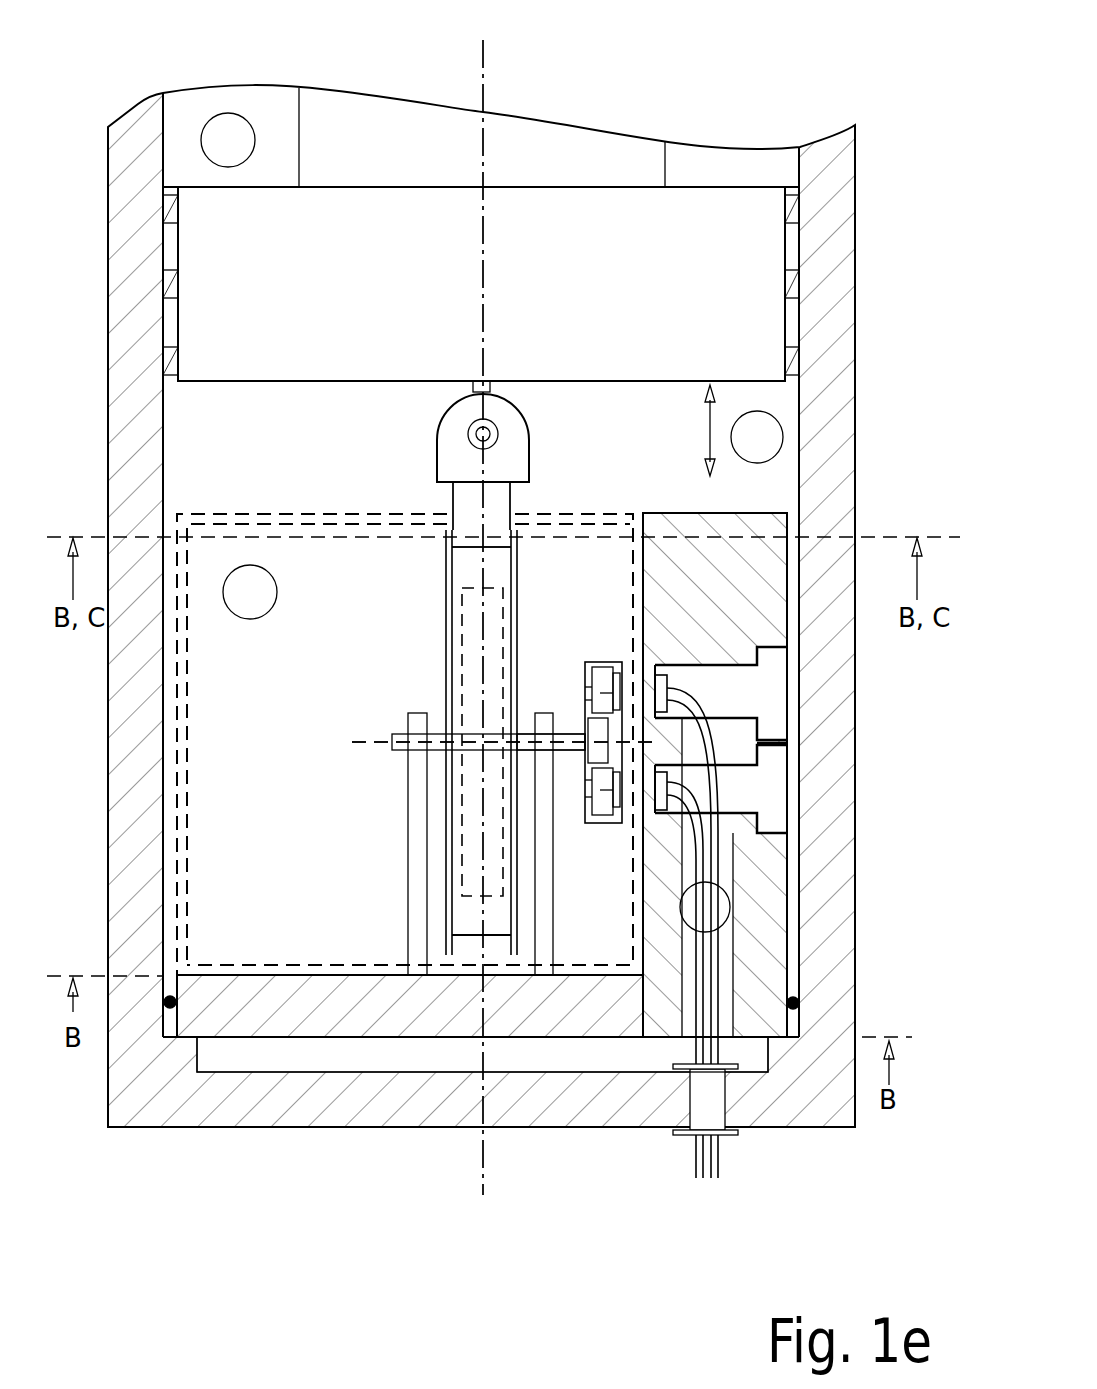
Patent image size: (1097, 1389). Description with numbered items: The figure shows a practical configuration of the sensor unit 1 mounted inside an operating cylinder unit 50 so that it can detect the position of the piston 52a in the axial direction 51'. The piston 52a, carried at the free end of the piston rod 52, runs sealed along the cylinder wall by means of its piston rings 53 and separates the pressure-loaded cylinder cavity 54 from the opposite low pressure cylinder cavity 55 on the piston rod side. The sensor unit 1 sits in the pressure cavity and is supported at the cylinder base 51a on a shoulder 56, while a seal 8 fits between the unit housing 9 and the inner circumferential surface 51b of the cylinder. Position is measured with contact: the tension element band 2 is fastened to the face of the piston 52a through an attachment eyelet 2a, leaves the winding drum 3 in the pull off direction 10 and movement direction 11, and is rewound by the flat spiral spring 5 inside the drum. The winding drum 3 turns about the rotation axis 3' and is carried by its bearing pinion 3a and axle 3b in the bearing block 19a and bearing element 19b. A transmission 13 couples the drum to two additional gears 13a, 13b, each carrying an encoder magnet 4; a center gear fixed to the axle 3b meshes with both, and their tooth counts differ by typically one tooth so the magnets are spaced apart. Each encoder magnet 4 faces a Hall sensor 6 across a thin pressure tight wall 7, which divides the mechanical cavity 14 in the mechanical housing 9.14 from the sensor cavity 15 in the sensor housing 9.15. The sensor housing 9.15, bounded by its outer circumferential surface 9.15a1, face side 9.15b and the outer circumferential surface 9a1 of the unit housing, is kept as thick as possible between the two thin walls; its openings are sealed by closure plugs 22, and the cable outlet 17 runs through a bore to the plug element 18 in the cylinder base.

The operating cylinder unit 50 is at (846, 66).
The cylinder base 51a is at (347, 1128).
The inner circumferential surface 51b is at (800, 800).
The axial direction 51' is at (525, 617).
The piston rod 52 is at (300, 150).
The piston 52a is at (481, 289).
The piston ring 53 is at (793, 213).
The cylinder cavity 54 is at (744, 430).
The cylinder cavity 55 is at (228, 140).
The sensor unit 1 is at (252, 477).
The tension element band 2 is at (481, 516).
The attachment eyelet 2a is at (497, 432).
The winding drum 3 is at (454, 742).
The rotation axis 3' is at (503, 715).
The bearing pinion 3a is at (392, 752).
The axle 3b is at (562, 735).
The encoder magnet 4 is at (616, 673).
The flat spiral spring 5 is at (462, 635).
The sensor 6 is at (668, 683).
The wall 7 is at (647, 720).
The seal 8 is at (799, 1002).
The unit housing 9 is at (616, 496).
The mechanical housing 9.14 is at (187, 735).
The sensor housing 9.15 is at (715, 775).
The outer circumferential surface 9.15a1 is at (790, 928).
The outer circumferential surface 9a1 is at (790, 928).
The face side 9.15b is at (175, 1037).
The pull off direction 10 is at (480, 503).
The movement direction 11 is at (480, 503).
The transmission 13 is at (598, 695).
The additional gear 13a is at (597, 668).
The additional gear 13b is at (594, 818).
The mechanical cavity 14 is at (250, 592).
The sensor cavity 15 is at (698, 933).
The cable outlet 17 is at (688, 1040).
The plug element 18 is at (708, 1098).
The bearing block 19a is at (410, 865).
The bearing element 19b is at (547, 910).
The closure plug 22 is at (721, 740).
The shoulder 56 is at (193, 1040).